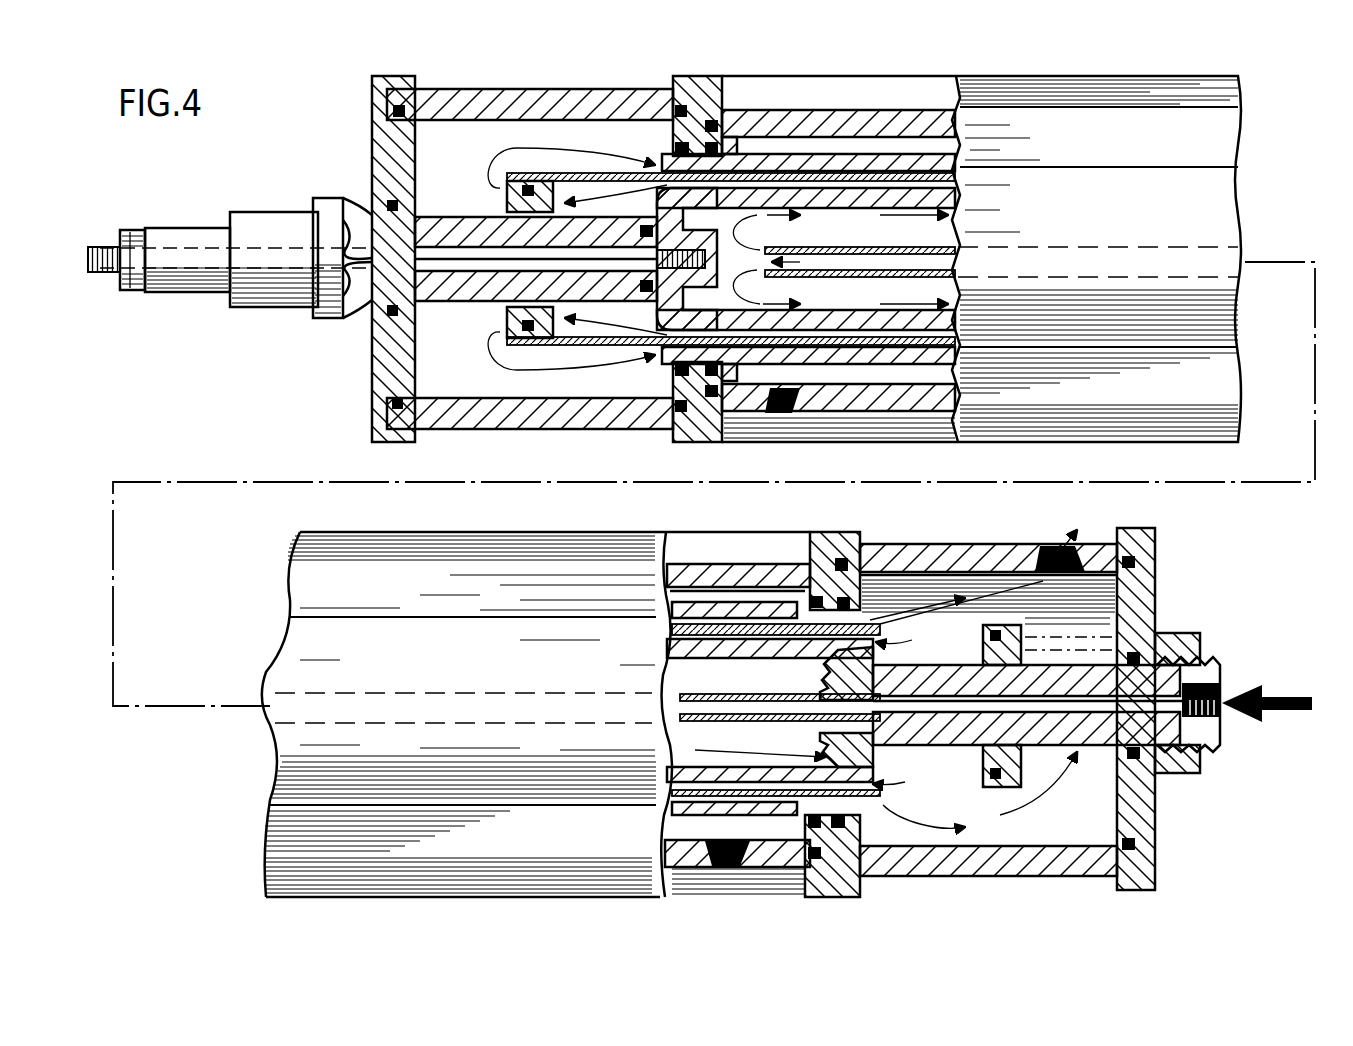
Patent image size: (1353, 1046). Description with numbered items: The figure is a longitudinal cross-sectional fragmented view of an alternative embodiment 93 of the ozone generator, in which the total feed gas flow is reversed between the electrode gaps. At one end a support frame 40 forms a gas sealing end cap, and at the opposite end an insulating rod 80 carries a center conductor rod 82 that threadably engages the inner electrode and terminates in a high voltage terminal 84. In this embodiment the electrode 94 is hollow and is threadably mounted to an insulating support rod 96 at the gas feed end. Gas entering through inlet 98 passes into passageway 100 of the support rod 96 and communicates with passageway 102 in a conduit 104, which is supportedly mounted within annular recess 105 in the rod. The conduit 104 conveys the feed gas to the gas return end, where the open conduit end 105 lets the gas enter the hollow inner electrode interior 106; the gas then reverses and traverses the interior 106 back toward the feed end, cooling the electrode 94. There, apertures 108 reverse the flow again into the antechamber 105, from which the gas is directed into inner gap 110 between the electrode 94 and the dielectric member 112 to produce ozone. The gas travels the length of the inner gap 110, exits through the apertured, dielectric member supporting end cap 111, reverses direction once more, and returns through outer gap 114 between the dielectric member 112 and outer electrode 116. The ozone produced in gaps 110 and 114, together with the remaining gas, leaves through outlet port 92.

The support frame 40 is at (953, 535).
The insulating rod 80 is at (350, 207).
The center conductor rod 82 is at (357, 318).
The high voltage terminal 84 is at (108, 248).
The outlet port 92 is at (1055, 547).
The alternative embodiment 93 is at (321, 152).
The electrode 94 is at (972, 216).
The insulating support rod 96 is at (1135, 662).
The inlet 98 is at (1225, 695).
The passageway 100 is at (1200, 770).
The passageway 102 is at (968, 270).
The conduit 104 is at (968, 247).
The conduit end 105 is at (797, 244).
The hollow inner electrode interior 106 is at (897, 244).
The apertures 108 is at (835, 668).
The inner gap 110 is at (970, 193).
The end cap 111 is at (510, 176).
The dielectric member 112 is at (965, 176).
The outer gap 114 is at (965, 160).
The outer electrode 116 is at (858, 152).